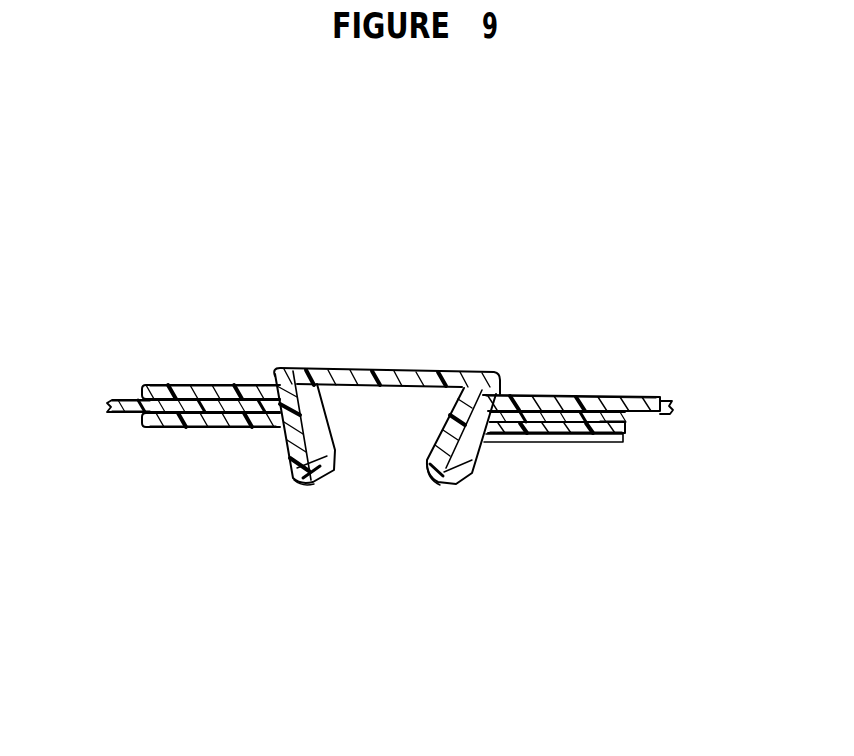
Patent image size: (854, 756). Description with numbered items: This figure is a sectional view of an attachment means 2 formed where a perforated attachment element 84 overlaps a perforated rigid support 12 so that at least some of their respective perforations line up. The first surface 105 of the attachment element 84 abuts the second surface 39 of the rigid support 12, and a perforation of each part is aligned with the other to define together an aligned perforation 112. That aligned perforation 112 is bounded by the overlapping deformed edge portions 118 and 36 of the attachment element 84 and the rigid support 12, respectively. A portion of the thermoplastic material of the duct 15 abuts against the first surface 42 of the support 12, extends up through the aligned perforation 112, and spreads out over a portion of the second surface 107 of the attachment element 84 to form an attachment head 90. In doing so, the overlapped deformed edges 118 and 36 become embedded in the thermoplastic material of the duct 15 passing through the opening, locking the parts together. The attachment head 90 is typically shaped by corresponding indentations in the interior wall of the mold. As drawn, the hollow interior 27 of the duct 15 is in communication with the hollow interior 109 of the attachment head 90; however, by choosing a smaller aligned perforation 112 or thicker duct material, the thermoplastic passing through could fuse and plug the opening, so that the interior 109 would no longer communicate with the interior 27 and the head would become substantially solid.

The attachment means 2 is at (268, 610).
The rigid support 12 is at (190, 417).
The duct 15 is at (253, 428).
The hollow interior of duct 27 is at (560, 597).
The deformed edge portion of rigid support 36 is at (290, 480).
The second surface of rigid support 39 is at (118, 398).
The first surface of rigid support 42 is at (114, 413).
The attachment element 84 is at (243, 384).
The attachment head 90 is at (367, 368).
The first surface of attachment element 105 is at (658, 416).
The second surface of attachment element 107 is at (177, 384).
The hollow interior of attachment head 109 is at (394, 427).
The aligned perforation 112 is at (385, 483).
The deformed edge portion of attachment element 118 is at (336, 447).